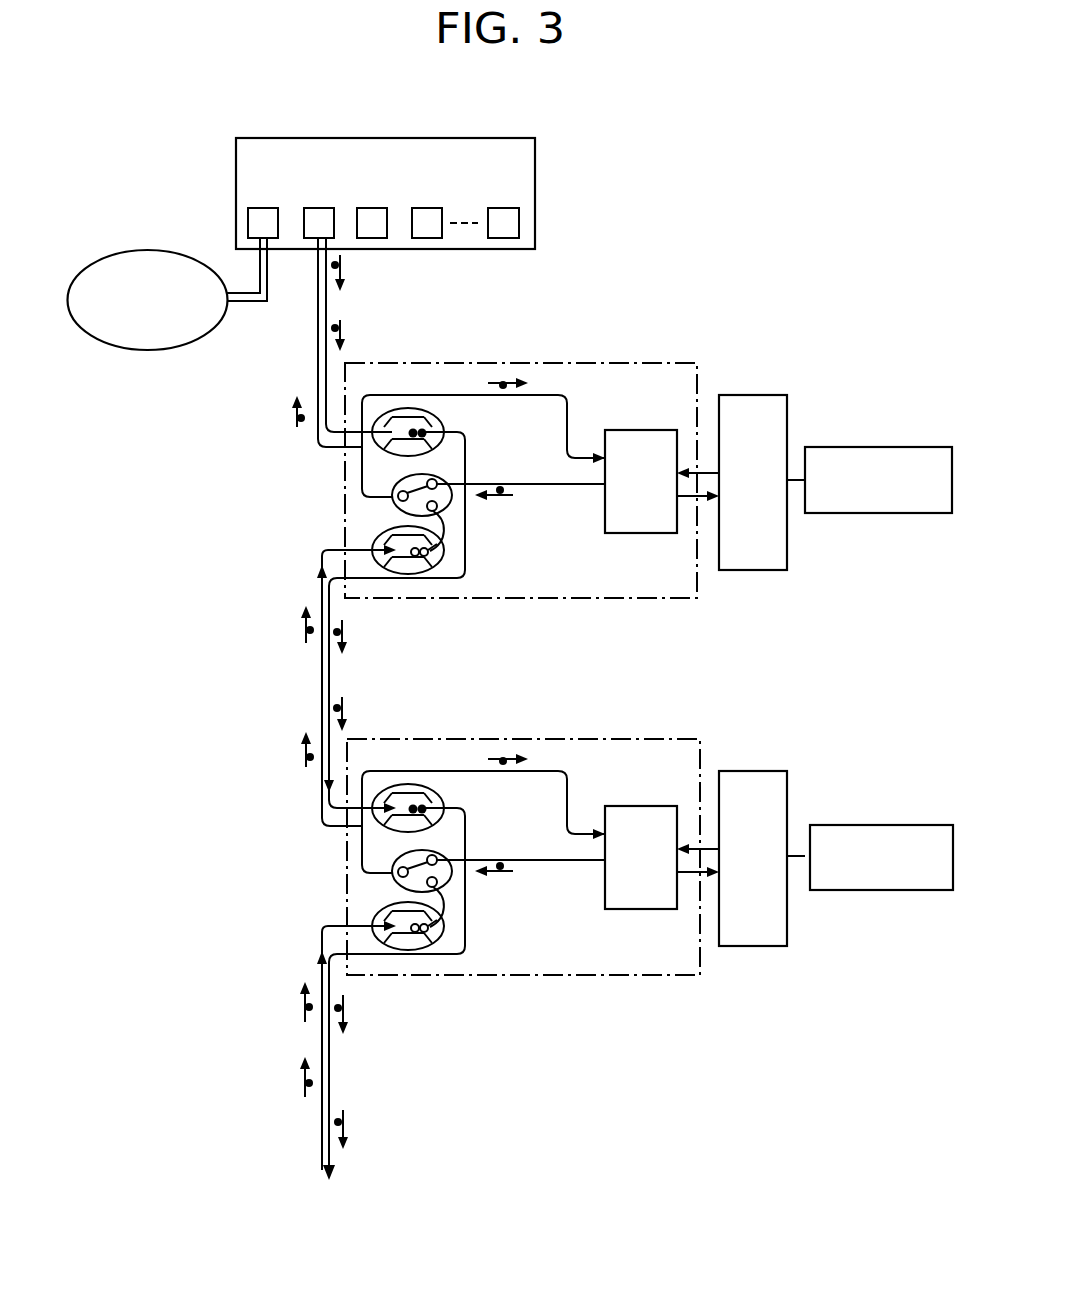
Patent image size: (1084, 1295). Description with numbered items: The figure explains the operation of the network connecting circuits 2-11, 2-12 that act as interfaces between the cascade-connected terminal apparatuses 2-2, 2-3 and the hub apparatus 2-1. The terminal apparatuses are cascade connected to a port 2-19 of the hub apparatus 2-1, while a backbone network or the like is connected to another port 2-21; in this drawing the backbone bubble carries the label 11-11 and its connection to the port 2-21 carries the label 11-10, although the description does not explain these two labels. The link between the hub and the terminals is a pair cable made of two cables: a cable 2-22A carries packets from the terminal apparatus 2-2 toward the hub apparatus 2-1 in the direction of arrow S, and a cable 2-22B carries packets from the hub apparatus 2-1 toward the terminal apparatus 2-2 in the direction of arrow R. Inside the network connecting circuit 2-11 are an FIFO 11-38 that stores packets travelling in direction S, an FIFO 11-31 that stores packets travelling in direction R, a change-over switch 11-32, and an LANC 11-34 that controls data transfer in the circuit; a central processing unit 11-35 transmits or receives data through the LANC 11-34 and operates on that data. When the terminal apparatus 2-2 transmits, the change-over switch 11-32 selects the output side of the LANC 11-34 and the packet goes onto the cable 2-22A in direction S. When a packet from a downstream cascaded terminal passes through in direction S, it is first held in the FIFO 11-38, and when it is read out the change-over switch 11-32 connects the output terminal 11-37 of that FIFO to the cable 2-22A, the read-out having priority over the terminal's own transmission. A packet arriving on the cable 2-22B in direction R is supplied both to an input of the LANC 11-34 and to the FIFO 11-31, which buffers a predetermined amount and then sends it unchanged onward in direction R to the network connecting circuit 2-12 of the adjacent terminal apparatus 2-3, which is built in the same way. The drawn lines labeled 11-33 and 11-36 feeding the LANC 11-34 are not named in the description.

The hub apparatus 2-1 is at (535, 177).
The port 2-19 is at (318, 208).
The port 2-21 is at (260, 208).
The terminal apparatus 2-2 is at (875, 447).
The terminal apparatus 2-3 is at (878, 825).
The network connecting circuit 2-11 is at (625, 363).
The network connecting circuit 2-12 is at (627, 739).
The cable 2-22A is at (318, 348).
The cable 2-22B is at (326, 298).
The connection line to backbone network 11-10 is at (250, 303).
The backbone network 11-11 is at (147, 349).
The FIFO 11-31 is at (442, 412).
The change-over switch 11-32 is at (433, 465).
The receive signal line 11-33 is at (565, 402).
The LANC 11-34 is at (652, 533).
The central processing unit 11-35 is at (757, 395).
The transmit signal line 11-36 is at (558, 484).
The output terminal 11-37 is at (445, 532).
The FIFO 11-38 is at (443, 567).
The arrow R is at (341, 318).
The arrow S is at (293, 424).